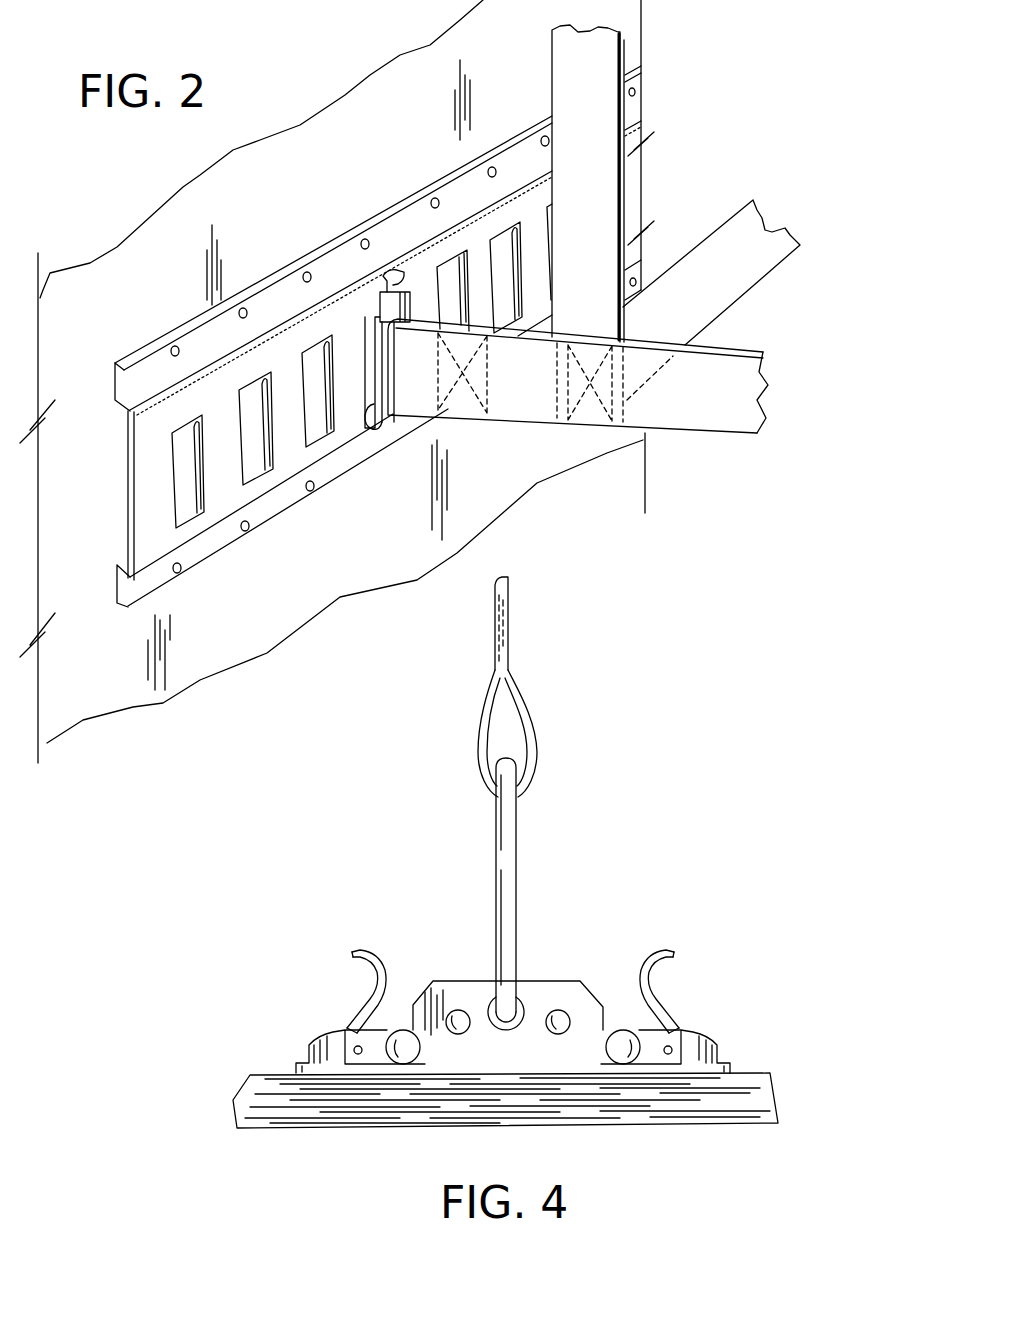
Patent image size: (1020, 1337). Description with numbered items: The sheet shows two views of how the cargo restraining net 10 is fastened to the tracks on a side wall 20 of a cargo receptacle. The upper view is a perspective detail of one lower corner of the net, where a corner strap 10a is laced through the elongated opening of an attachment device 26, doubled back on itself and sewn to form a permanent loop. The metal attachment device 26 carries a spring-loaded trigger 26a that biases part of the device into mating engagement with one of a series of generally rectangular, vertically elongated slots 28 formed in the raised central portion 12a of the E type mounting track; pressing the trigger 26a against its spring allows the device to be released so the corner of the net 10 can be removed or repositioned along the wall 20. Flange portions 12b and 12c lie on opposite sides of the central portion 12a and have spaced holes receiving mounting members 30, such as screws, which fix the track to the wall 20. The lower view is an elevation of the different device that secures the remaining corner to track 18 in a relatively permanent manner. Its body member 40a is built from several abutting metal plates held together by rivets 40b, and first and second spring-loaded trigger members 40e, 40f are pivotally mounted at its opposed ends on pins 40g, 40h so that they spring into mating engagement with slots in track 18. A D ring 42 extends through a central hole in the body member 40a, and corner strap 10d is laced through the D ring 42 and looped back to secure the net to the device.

In FIG. 2, the cargo restraining net 10 is at (597, 77).
In FIG. 2, the corner strap 10a is at (513, 393).
In FIG. 4, the corner strap 10d is at (508, 645).
In FIG. 2, the raised central portion 12a is at (152, 497).
In FIG. 2, the flange portion 12b is at (123, 597).
In FIG. 2, the flange portion 12c is at (130, 380).
In FIG. 4, the track 18 is at (760, 1087).
In FIG. 2, the side wall 20 is at (280, 181).
In FIG. 2, the attachment device 26 is at (373, 402).
In FIG. 2, the spring-loaded trigger 26a is at (393, 272).
In FIG. 2, the slot 28 is at (313, 420).
In FIG. 2, the mounting member 30 is at (545, 140).
In FIG. 4, the body member 40a is at (535, 993).
In FIG. 4, the rivet 40b is at (457, 1020).
In FIG. 4, the first spring-loaded trigger member 40e is at (666, 975).
In FIG. 4, the second spring-loaded trigger member 40f is at (374, 984).
In FIG. 4, the pin 40g is at (631, 1055).
In FIG. 4, the pin 40h is at (403, 1055).
In FIG. 4, the D ring 42 is at (516, 808).